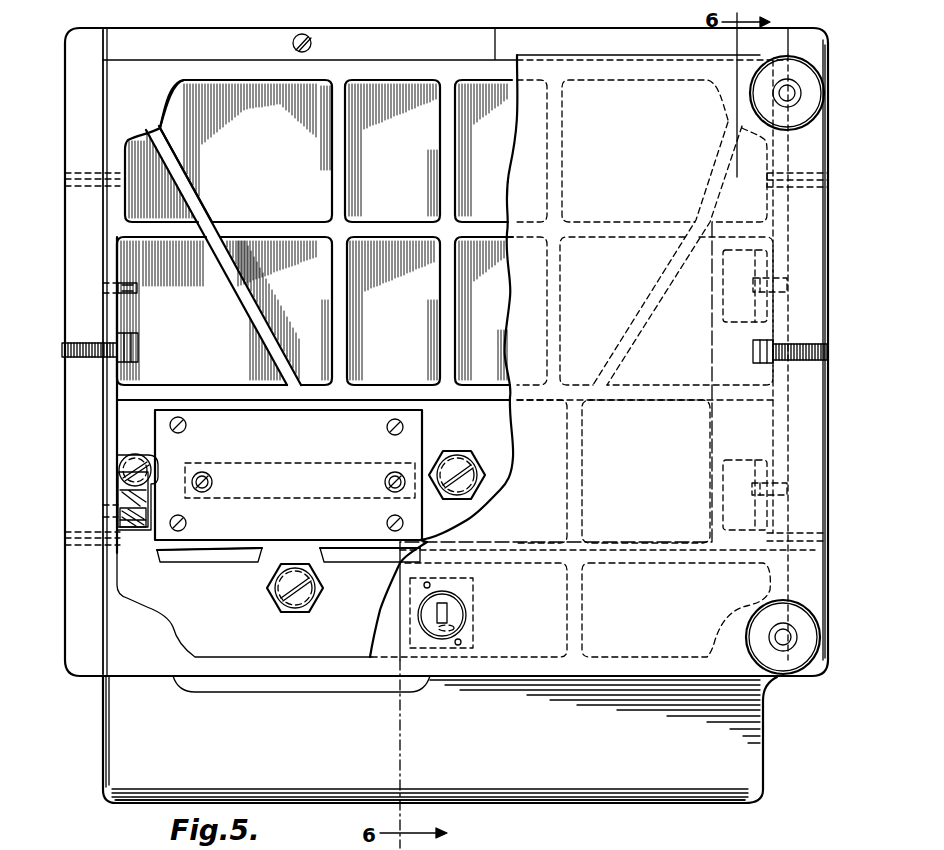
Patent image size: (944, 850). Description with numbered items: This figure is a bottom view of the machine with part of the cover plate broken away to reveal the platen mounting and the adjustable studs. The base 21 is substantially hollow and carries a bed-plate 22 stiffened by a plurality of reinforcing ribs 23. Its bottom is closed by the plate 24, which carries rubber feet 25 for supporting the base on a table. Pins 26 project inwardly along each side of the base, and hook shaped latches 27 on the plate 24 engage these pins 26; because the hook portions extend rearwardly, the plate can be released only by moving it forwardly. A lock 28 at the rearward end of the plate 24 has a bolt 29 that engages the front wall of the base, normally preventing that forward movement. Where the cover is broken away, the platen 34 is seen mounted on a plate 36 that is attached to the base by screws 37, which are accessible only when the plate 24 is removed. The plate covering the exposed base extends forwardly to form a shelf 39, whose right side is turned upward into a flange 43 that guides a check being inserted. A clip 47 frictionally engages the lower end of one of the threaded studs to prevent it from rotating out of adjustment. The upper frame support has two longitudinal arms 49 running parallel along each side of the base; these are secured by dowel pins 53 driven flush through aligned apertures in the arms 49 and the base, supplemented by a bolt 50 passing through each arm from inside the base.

The base 21 is at (246, 151).
The bed-plate 22 is at (393, 311).
The reinforcing ribs 23 is at (447, 362).
The plate 24 is at (517, 212).
The rubber feet 25 is at (765, 105).
The pins 26 is at (137, 291).
The hook shaped latches 27 is at (745, 323).
The lock 28 is at (450, 615).
The bolt 29 is at (460, 653).
The platen 34 is at (266, 478).
The plate 36 is at (413, 437).
The screws 37 is at (187, 425).
The shelf 39 is at (604, 787).
The flange 43 is at (102, 746).
The clip 47 is at (123, 470).
The longitudinal arms 49 is at (80, 400).
The bolt 50 is at (138, 340).
The dowel pins 53 is at (87, 170).